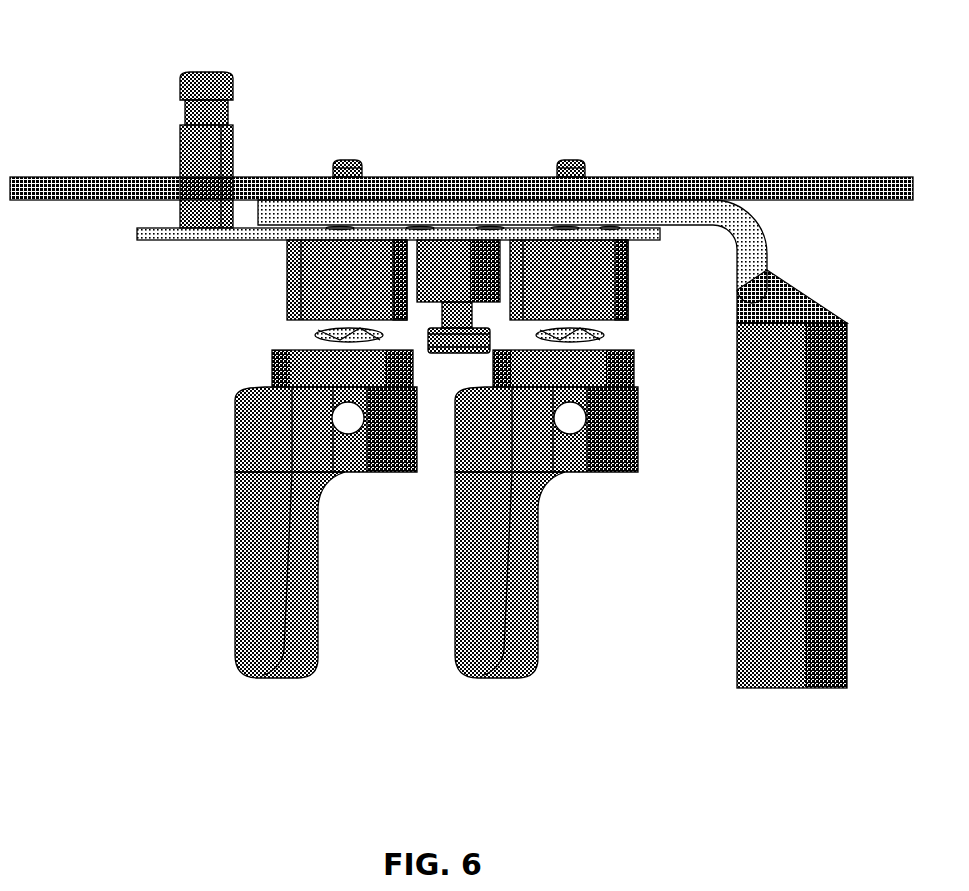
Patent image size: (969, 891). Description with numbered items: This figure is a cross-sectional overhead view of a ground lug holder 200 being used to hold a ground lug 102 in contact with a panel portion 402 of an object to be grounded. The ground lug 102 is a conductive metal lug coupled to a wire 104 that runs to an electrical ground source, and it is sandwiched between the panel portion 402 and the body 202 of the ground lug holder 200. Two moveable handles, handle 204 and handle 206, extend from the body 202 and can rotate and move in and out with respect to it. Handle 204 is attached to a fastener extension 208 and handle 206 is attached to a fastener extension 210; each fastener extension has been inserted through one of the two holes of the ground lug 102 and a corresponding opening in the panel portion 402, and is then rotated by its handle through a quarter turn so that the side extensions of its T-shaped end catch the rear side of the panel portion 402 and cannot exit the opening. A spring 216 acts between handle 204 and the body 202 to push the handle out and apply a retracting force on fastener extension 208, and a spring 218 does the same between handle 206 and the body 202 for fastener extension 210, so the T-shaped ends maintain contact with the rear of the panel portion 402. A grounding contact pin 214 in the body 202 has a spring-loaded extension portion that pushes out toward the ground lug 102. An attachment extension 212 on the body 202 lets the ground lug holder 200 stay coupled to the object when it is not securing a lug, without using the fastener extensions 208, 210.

The ground lug 102 is at (663, 205).
The wire 104 is at (847, 578).
The ground lug holder 200 is at (110, 235).
The body 202 is at (165, 242).
The handle 204 is at (243, 680).
The handle 206 is at (470, 680).
The fastener extension 208 is at (348, 160).
The fastener extension 210 is at (568, 160).
The attachment extension 212 is at (198, 72).
The grounding contact pin 214 is at (475, 347).
The spring 216 is at (313, 330).
The spring 218 is at (593, 345).
The panel portion 402 is at (36, 177).